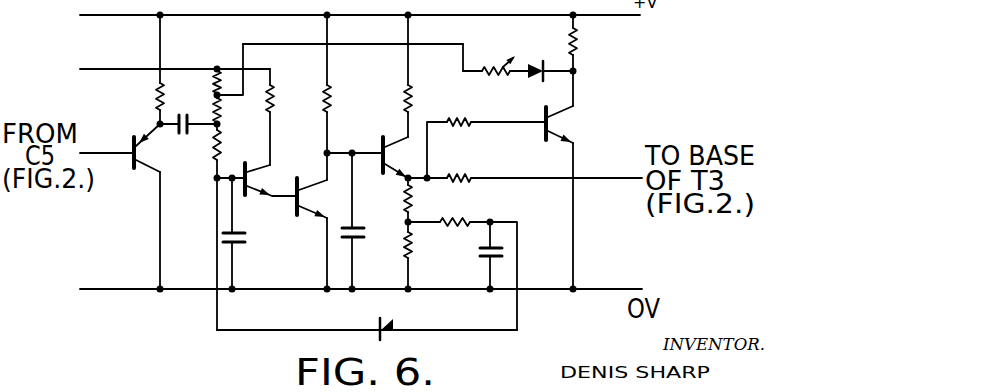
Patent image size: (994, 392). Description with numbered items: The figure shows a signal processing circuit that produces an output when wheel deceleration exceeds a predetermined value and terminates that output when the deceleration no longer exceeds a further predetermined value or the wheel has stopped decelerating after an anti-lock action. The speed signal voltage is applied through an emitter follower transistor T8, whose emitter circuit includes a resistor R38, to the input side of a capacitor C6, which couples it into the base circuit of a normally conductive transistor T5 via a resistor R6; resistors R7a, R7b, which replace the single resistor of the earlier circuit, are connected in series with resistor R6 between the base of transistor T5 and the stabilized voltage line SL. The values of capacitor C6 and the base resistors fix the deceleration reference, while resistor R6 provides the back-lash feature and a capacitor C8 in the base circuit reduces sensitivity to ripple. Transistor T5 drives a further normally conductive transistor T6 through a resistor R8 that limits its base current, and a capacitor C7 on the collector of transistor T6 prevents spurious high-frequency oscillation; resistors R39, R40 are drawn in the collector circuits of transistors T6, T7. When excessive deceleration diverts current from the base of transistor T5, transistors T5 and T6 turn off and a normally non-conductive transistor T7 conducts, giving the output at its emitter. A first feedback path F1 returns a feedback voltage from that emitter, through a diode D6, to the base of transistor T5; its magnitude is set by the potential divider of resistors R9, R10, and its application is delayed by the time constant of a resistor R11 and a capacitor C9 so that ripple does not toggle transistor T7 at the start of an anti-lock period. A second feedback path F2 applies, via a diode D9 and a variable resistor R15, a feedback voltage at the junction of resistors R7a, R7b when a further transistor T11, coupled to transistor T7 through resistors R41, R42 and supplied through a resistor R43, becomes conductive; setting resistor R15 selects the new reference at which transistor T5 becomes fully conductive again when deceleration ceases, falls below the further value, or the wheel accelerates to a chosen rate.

The stabilized voltage line SL is at (92, 69).
The feedback path F1 is at (434, 330).
The second feedback path F2 is at (421, 44).
The resistor R38 is at (137, 100).
The capacitor C6 is at (200, 104).
The resistor R7b is at (213, 80).
The resistor R7a is at (222, 108).
The resistor R6 is at (232, 147).
The resistor R8 is at (285, 101).
The emitter follower transistor T8 is at (162, 148).
The transistor T5 is at (252, 180).
The transistor T6 is at (311, 199).
The capacitor C8 is at (246, 236).
The capacitor C7 is at (364, 236).
The resistor R39 is at (350, 101).
The resistor R40 is at (432, 101).
The transistor T7 is at (390, 155).
The resistor R9 is at (392, 200).
The resistor R10 is at (429, 250).
The resistor R11 is at (452, 216).
The capacitor C9 is at (478, 252).
The resistor R41 is at (460, 117).
The resistor R42 is at (455, 174).
The variable resistor R15 is at (492, 53).
The diode D9 is at (545, 53).
The resistor R43 is at (597, 44).
The further transistor T11 is at (556, 124).
The diode D6 is at (380, 318).